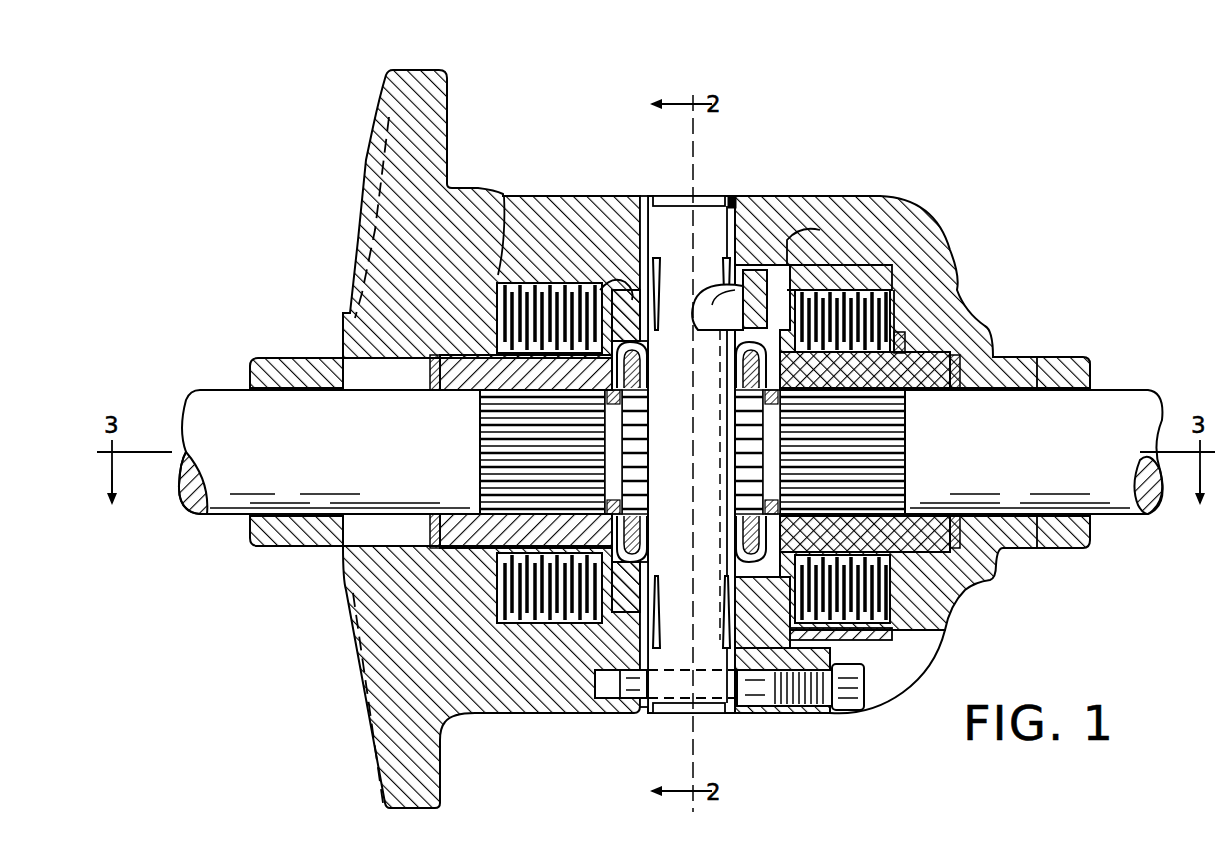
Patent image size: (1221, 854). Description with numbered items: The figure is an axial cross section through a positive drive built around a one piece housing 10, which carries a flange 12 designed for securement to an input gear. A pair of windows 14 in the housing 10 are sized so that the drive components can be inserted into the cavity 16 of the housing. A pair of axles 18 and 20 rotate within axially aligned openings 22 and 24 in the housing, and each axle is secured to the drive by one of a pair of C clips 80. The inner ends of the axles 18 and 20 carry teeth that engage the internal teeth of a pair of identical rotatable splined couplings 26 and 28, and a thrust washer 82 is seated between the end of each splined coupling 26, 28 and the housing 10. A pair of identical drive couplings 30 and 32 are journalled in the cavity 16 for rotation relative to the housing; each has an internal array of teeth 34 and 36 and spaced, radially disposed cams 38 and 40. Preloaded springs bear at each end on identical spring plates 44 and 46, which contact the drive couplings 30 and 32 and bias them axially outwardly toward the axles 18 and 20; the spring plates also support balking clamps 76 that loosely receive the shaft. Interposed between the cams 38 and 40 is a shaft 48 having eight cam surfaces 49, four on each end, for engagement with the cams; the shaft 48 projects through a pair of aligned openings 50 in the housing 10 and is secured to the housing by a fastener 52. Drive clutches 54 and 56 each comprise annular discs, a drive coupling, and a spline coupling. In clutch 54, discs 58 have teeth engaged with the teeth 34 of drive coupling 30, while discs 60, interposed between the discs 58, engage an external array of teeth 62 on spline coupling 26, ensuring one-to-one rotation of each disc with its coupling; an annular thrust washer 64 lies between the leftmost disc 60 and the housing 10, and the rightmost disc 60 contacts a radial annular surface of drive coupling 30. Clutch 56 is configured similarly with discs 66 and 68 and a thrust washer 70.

The housing 10 is at (900, 237).
The flange 12 is at (430, 107).
The windows 14 is at (805, 240).
The cavity 16 is at (500, 287).
The axle 18 is at (205, 405).
The axle 20 is at (1123, 410).
The opening 22 is at (300, 358).
The opening 24 is at (1043, 365).
The splined coupling 26 is at (478, 516).
The splined coupling 28 is at (928, 515).
The drive coupling 30 is at (622, 272).
The drive coupling 32 is at (720, 282).
The internal array of teeth 34 is at (500, 273).
The internal array of teeth 36 is at (900, 275).
The cams 38 is at (640, 200).
The cams 40 is at (782, 225).
The spring plate 44 is at (641, 372).
The spring plate 46 is at (749, 560).
The shaft 48 is at (670, 215).
The cam surfaces 49 is at (657, 320).
The openings 50 is at (733, 200).
The fastener 52 is at (800, 705).
The drive clutch 54 is at (492, 308).
The drive clutch 56 is at (900, 298).
The discs 58 is at (548, 295).
The discs 60 is at (530, 355).
The external array of teeth 62 is at (488, 560).
The thrust washer 64 is at (498, 300).
The discs 66 is at (840, 300).
The discs 68 is at (838, 345).
The thrust washer 70 is at (899, 313).
The balking clamps 76 is at (630, 340).
The C clips 80 is at (762, 500).
The thrust washer 82 is at (428, 373).